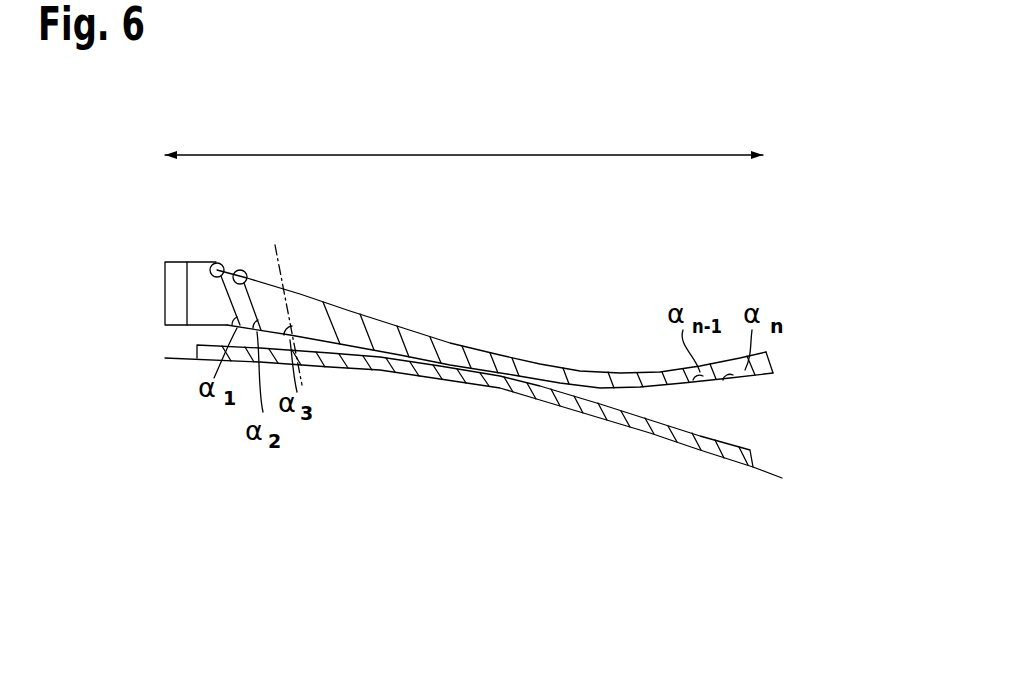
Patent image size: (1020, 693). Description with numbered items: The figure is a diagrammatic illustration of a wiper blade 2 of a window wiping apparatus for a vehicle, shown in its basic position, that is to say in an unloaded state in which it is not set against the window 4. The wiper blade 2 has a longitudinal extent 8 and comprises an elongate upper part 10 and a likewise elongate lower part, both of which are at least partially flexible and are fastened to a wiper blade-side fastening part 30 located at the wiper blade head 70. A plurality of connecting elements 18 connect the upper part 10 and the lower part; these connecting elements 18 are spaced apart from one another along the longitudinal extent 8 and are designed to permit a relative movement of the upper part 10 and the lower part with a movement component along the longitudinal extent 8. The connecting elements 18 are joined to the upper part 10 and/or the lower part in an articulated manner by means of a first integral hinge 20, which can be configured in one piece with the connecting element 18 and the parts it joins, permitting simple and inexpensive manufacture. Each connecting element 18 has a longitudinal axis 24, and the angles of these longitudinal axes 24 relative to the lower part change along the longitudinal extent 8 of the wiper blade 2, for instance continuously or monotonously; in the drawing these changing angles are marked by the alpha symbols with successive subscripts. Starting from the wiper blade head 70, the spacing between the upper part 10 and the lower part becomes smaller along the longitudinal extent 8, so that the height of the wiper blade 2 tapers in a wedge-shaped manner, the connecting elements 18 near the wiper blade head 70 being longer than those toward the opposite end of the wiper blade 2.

The wiper blade 2 is at (495, 286).
The window 4 is at (639, 452).
The longitudinal extent 8 is at (463, 155).
The upper part 10 is at (578, 370).
The connecting elements 18 is at (376, 334).
The first integral hinge 20 is at (218, 263).
The longitudinal axes 24 is at (288, 280).
The wiper blade-side fastening part 30 is at (175, 302).
The wiper blade head 70 is at (172, 312).